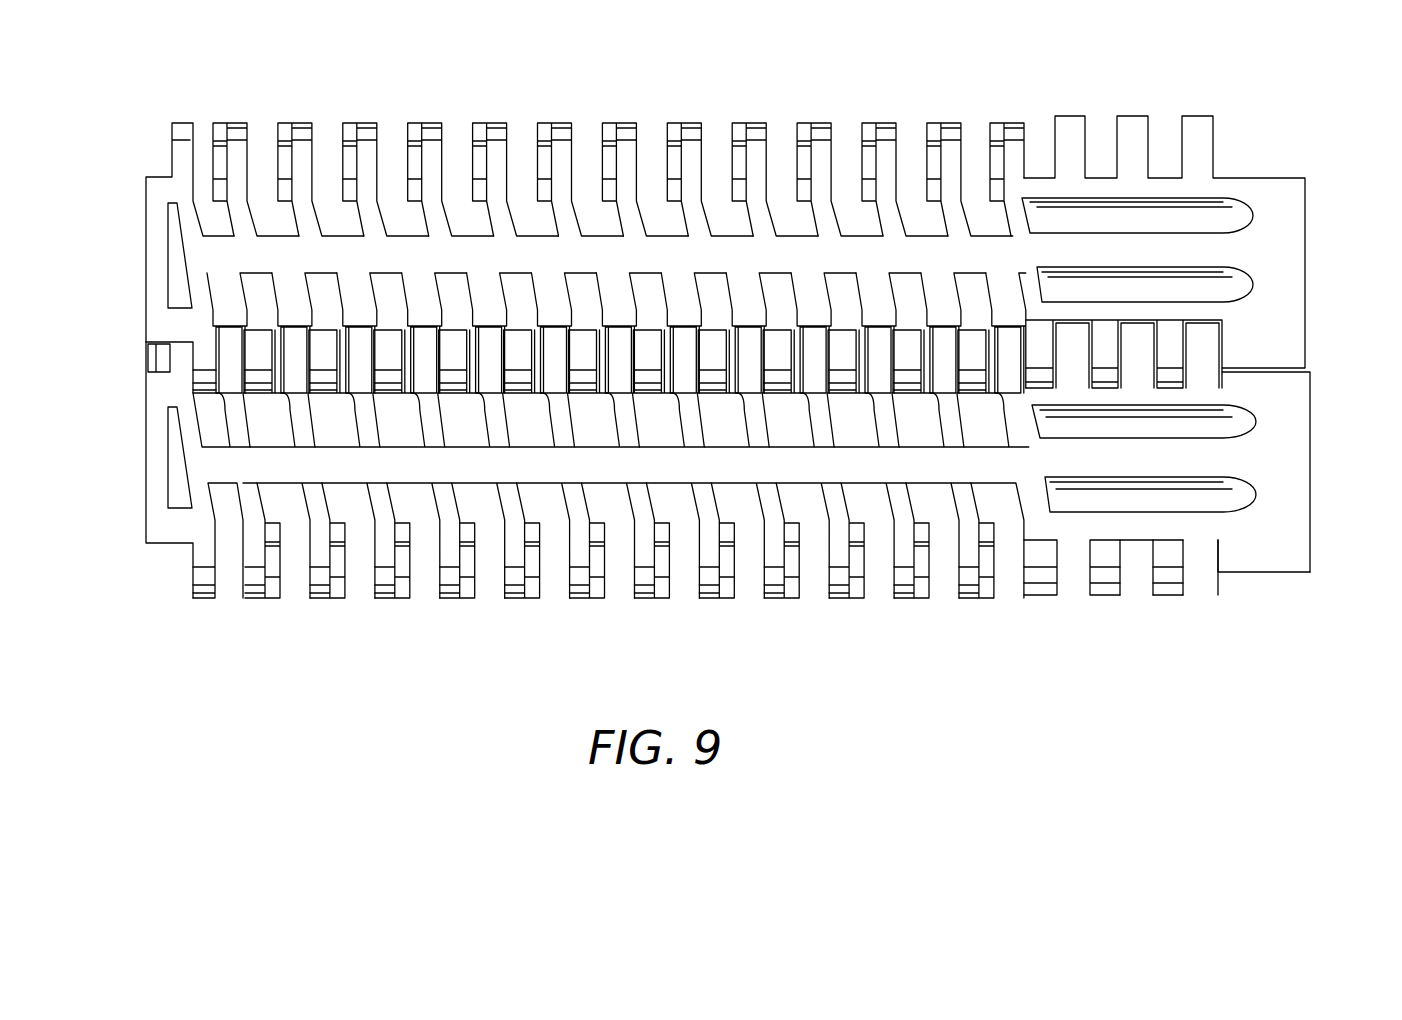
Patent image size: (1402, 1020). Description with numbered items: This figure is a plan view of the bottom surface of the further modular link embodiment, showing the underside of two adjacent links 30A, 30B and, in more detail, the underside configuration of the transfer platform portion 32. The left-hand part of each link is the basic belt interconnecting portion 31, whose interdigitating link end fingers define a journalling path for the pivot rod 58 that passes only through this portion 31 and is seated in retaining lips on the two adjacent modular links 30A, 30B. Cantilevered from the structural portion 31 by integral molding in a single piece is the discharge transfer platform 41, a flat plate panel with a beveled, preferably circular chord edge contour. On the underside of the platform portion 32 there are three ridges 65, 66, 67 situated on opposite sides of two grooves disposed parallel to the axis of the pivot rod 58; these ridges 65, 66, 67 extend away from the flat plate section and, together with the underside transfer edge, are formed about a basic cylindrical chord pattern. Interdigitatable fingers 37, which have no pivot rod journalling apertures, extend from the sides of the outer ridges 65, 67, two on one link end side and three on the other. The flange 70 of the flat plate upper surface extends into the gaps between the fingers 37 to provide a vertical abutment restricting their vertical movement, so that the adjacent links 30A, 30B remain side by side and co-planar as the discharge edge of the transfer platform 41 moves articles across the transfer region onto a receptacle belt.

The belt interconnecting portion 31 is at (1006, 105).
The transfer platform portion 32 is at (1302, 105).
The modular link 30B is at (138, 237).
The modular link 30A is at (138, 455).
The pivot rod 58 is at (150, 357).
The ridge 65 is at (1326, 393).
The ridge 66 is at (1328, 472).
The ridge 67 is at (1330, 545).
The transfer platform 41 is at (1252, 573).
The interdigitatable finger 37 is at (1160, 594).
The flange 70 is at (1195, 540).